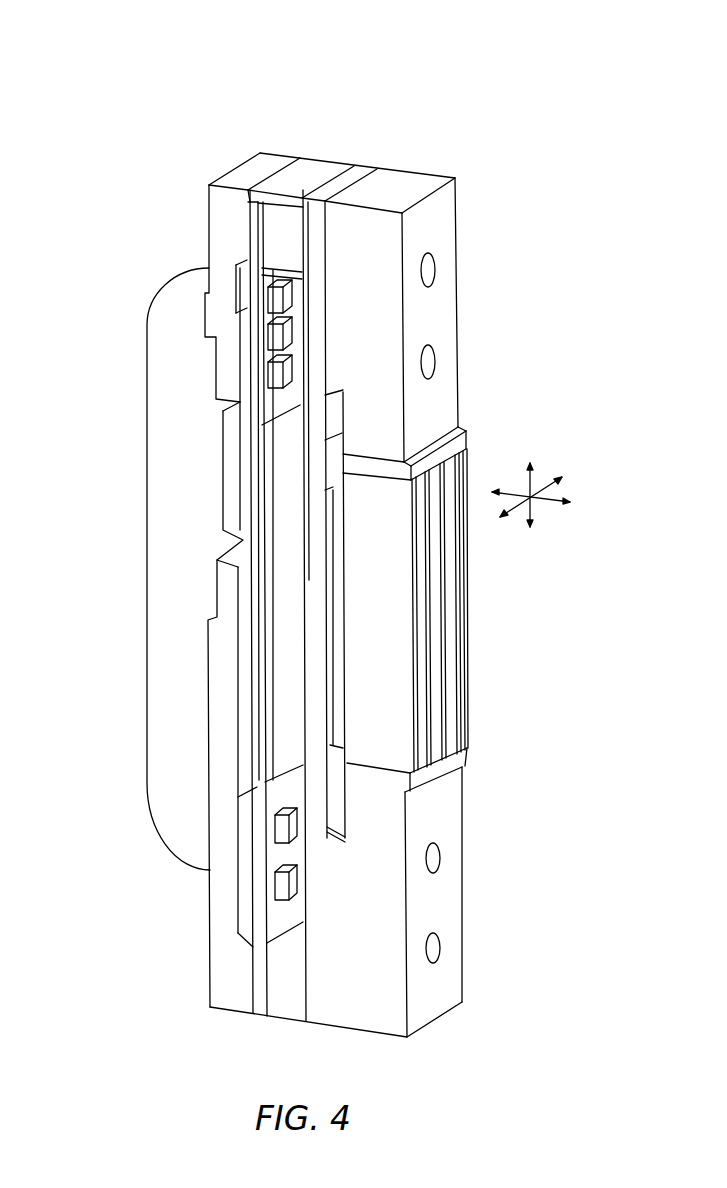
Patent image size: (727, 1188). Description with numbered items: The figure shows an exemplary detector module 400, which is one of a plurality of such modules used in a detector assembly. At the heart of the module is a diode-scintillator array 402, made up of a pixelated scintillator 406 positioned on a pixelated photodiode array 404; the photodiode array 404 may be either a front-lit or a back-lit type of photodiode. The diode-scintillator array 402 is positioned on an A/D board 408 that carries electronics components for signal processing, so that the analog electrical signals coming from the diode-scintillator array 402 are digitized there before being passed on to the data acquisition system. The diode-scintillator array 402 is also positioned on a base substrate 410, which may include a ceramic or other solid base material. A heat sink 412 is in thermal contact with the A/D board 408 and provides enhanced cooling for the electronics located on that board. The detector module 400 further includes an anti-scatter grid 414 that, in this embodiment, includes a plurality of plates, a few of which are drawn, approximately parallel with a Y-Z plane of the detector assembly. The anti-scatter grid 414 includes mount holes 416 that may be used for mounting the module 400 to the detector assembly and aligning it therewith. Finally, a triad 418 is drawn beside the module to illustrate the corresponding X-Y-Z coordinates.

The detector module 400 is at (475, 108).
The diode-scintillator array 402 is at (297, 490).
The pixelated photodiode array 404 is at (327, 642).
The pixelated scintillator 406 is at (340, 753).
The A/D board 408 is at (240, 765).
The base substrate 410 is at (313, 223).
The heat sink 412 is at (167, 467).
The anti-scatter grid 414 is at (490, 618).
The mount holes 416 is at (440, 860).
The triad 418 is at (538, 437).